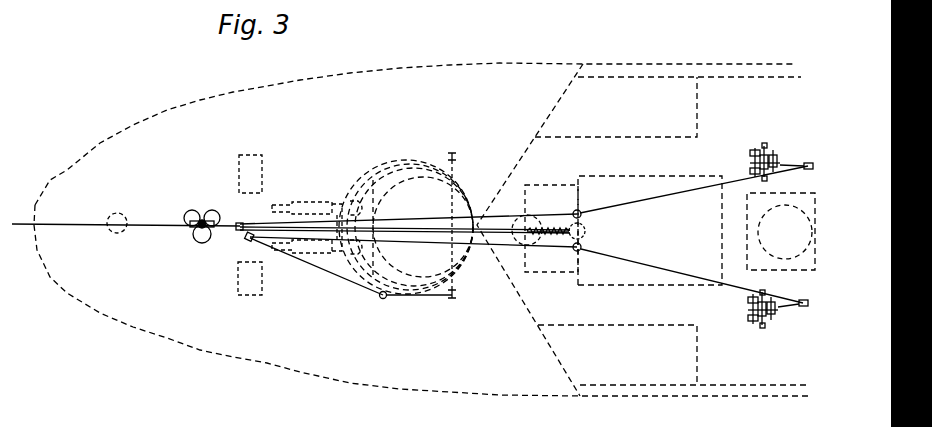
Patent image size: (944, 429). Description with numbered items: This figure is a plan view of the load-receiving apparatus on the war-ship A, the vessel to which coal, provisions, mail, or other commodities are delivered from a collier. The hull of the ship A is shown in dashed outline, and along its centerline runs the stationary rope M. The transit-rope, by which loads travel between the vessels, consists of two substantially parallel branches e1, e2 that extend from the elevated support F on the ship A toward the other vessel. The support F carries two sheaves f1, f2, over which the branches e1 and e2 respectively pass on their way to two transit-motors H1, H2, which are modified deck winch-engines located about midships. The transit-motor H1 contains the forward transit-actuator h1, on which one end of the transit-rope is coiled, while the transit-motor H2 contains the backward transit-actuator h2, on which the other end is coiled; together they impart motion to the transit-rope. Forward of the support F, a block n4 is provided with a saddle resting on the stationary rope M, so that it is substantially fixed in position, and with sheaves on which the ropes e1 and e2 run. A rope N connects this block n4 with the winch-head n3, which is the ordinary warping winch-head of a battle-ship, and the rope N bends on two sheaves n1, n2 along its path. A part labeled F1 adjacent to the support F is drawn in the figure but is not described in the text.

The ship A is at (424, 229).
The stationary rope M is at (80, 225).
The rope N is at (332, 274).
The sheave n1 is at (382, 299).
The sheave n2 is at (247, 232).
The winch-head n3 is at (454, 240).
The block n4 is at (238, 223).
The spring housing F1 is at (524, 218).
The elevated support F is at (567, 232).
The sheave f1 is at (566, 257).
The sheave f2 is at (568, 214).
The branch of transit-rope e1 is at (692, 273).
The branch of transit-rope e2 is at (694, 189).
The transit-motor H1 is at (757, 320).
The transit-motor H2 is at (763, 149).
The forward transit-actuator h1 is at (780, 308).
The backward transit-actuator h2 is at (780, 160).